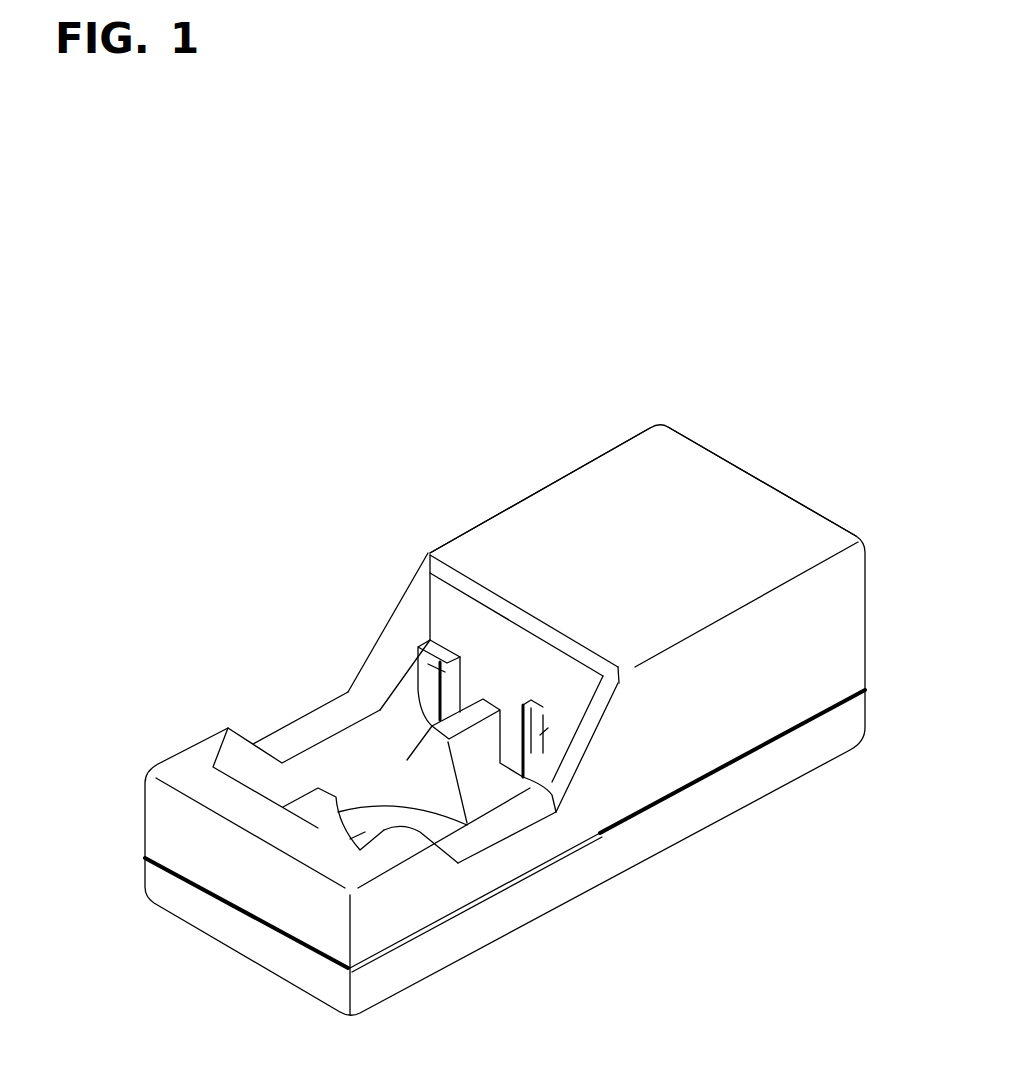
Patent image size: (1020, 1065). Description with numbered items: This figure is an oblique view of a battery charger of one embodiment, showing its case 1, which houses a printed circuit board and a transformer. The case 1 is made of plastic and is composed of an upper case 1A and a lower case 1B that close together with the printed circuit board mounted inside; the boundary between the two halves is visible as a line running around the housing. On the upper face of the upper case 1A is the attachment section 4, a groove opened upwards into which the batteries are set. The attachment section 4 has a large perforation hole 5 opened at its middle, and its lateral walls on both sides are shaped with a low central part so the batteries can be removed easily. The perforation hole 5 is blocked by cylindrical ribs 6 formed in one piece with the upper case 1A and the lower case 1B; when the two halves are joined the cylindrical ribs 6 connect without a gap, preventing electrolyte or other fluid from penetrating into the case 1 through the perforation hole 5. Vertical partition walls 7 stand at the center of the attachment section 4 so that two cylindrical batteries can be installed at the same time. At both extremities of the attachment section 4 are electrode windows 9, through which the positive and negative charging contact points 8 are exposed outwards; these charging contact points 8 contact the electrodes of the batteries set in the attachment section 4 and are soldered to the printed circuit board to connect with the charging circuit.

The case 1 is at (873, 630).
The upper case 1A is at (710, 473).
The lower case 1B is at (812, 757).
The attachment section 4 is at (296, 643).
The perforation hole 5 is at (352, 800).
The cylindrical ribs 6 is at (390, 818).
The vertical partition walls 7 is at (330, 823).
The charging contact points 8 is at (447, 677).
The electrode windows 9 is at (430, 665).